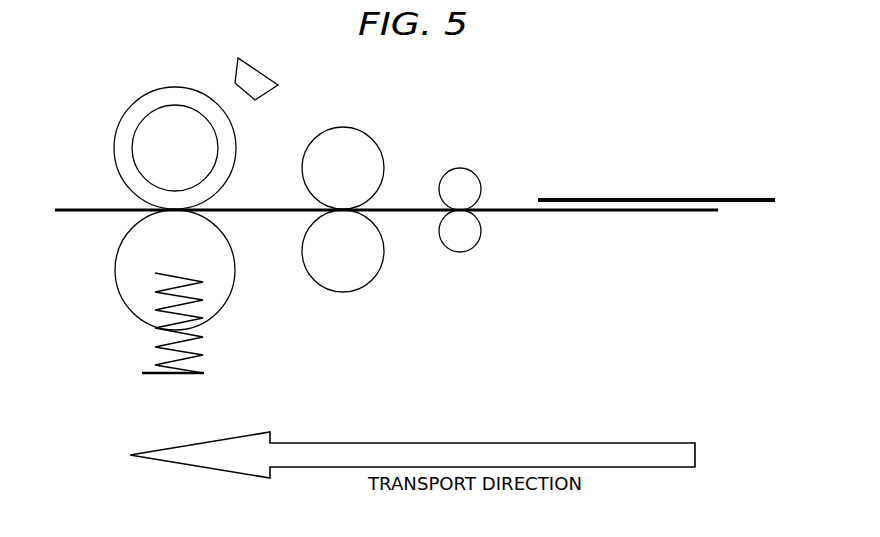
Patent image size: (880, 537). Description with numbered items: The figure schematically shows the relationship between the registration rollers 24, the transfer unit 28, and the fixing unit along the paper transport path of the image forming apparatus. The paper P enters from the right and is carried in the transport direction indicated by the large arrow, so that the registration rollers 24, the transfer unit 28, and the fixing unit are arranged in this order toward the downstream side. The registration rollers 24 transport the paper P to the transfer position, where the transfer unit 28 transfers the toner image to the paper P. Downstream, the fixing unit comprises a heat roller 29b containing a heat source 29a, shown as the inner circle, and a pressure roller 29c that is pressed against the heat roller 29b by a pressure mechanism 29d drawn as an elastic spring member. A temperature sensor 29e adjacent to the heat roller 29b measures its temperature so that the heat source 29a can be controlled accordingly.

The heat source 29a is at (150, 112).
The heat roller 29b is at (123, 106).
The pressure roller 29c is at (113, 277).
The pressure mechanism 29d is at (156, 352).
The temperature sensor 29e is at (283, 83).
The transfer unit 28 is at (343, 300).
The registration rollers 24 is at (463, 262).
The paper P is at (730, 198).